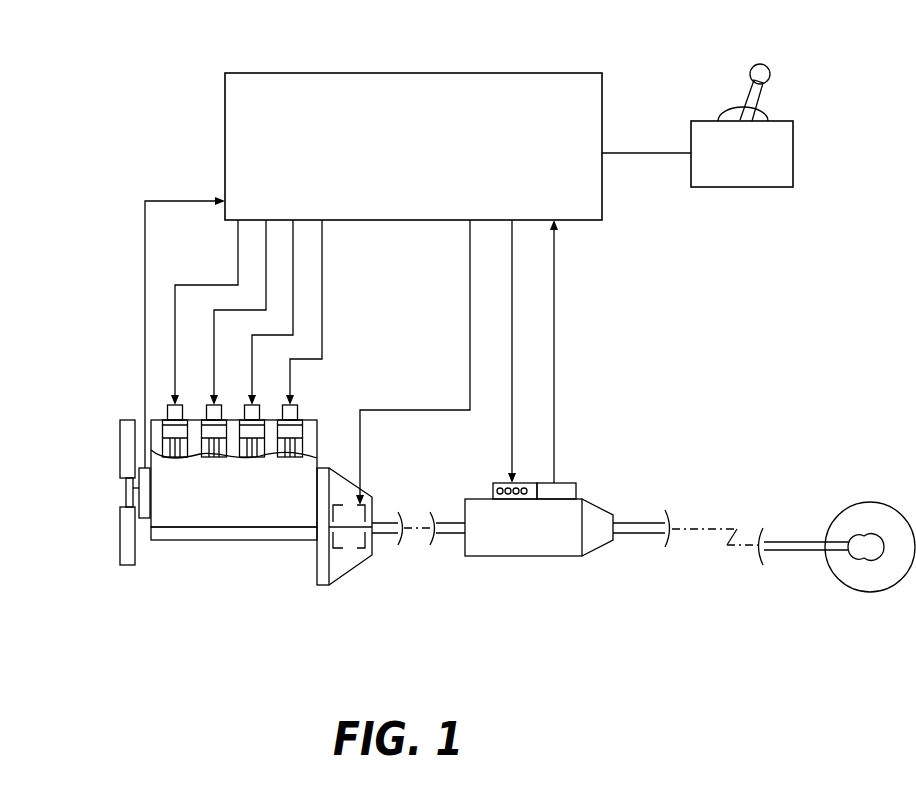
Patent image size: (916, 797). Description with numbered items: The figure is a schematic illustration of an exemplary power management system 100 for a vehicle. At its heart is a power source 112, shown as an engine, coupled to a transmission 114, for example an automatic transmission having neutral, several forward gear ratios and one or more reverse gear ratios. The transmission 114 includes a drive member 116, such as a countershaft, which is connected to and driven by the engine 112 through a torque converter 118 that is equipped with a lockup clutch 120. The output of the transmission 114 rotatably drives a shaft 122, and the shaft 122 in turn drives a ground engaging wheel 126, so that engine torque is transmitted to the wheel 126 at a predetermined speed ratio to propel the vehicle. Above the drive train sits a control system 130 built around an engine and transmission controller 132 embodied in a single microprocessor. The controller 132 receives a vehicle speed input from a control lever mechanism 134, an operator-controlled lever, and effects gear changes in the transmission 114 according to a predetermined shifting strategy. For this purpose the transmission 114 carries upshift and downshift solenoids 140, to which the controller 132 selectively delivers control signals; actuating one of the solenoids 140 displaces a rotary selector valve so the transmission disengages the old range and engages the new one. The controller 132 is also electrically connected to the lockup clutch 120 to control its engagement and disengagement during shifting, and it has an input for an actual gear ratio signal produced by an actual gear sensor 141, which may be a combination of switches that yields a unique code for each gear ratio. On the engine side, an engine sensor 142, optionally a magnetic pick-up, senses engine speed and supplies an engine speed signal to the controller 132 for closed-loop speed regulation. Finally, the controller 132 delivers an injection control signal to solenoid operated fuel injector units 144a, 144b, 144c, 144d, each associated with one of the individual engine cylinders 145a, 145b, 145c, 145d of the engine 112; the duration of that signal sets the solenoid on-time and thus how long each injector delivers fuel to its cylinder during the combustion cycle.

The power management system 100 is at (103, 610).
The power source 112 is at (215, 541).
The transmission 114 is at (520, 557).
The drive member 116 is at (457, 535).
The torque converter 118 is at (334, 586).
The lockup clutch 120 is at (345, 550).
The shaft 122 is at (640, 534).
The ground engaging wheel 126 is at (850, 595).
The control system 130 is at (540, 54).
The engine and transmission controller 132 is at (330, 73).
The control lever mechanism 134 is at (793, 142).
The upshift and downshift solenoids 140 is at (494, 483).
The actual gear sensor 141 is at (576, 491).
The engine sensor 142 is at (147, 520).
The solenoid operated fuel injector unit 144a is at (168, 406).
The solenoid operated fuel injector unit 144b is at (205, 406).
The solenoid operated fuel injector unit 144c is at (258, 406).
The solenoid operated fuel injector unit 144d is at (297, 408).
The engine cylinder 145a is at (163, 442).
The engine cylinder 145b is at (210, 457).
The engine cylinder 145c is at (247, 458).
The engine cylinder 145d is at (302, 426).